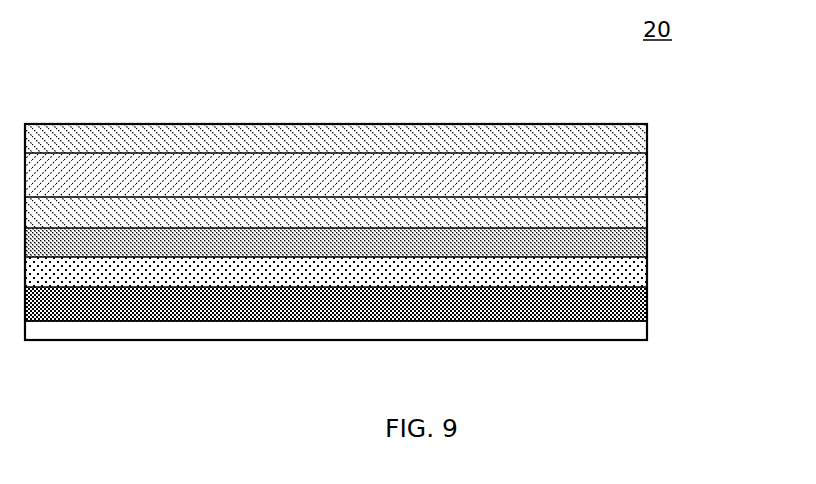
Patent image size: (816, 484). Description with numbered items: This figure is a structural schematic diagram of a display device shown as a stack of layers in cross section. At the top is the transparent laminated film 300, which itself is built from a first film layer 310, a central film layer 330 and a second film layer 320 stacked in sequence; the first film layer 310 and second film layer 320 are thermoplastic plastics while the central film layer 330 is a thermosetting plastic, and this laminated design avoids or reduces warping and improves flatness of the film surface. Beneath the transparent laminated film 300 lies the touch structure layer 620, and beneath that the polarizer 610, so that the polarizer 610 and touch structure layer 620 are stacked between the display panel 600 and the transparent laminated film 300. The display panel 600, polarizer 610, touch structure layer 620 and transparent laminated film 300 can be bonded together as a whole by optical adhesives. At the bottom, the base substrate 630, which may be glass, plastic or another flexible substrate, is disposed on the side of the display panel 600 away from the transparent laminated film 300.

The transparent laminated film 300 is at (412, 176).
The first film layer 310 is at (632, 140).
The central film layer 330 is at (632, 178).
The second film layer 320 is at (632, 216).
The touch structure layer 620 is at (632, 244).
The polarizer 610 is at (632, 275).
The display panel 600 is at (632, 304).
The base substrate 630 is at (632, 329).